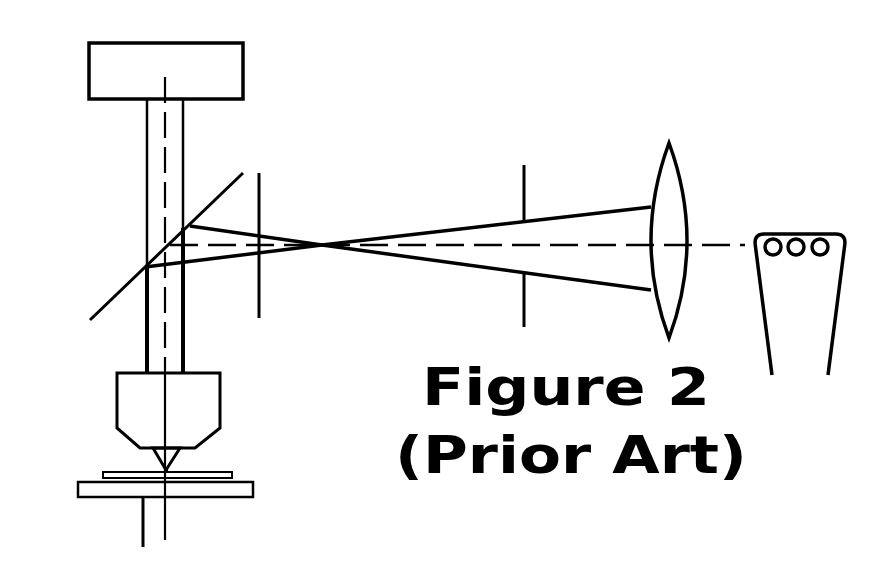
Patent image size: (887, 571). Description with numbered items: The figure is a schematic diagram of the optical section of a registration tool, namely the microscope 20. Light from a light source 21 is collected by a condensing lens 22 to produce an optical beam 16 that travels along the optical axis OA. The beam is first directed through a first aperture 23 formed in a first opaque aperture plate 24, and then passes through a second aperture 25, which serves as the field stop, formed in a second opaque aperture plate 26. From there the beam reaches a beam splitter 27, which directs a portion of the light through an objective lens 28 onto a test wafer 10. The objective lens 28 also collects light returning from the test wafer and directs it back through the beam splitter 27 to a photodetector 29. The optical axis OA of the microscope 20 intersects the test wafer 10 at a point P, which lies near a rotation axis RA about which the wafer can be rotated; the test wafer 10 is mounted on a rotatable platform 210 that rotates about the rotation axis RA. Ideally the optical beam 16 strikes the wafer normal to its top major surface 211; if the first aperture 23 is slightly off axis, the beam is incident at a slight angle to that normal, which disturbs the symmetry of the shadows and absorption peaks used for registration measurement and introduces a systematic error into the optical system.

The photodetector 29 is at (221, 70).
The beam splitter 27 is at (222, 191).
The second opaque aperture plate 26 is at (262, 213).
The second aperture 25 is at (267, 235).
The optical beam 16 is at (500, 232).
The microscope 20 is at (408, 160).
The first opaque aperture plate 24 is at (526, 187).
The condensing lens 22 is at (683, 178).
The light source 21 is at (792, 232).
The first aperture 23 is at (525, 252).
The optical axis OA is at (602, 248).
The objective lens 28 is at (197, 413).
The test wafer 10 is at (225, 475).
The rotatable platform 210 is at (247, 487).
The top major surface 211 is at (105, 472).
The point P is at (172, 470).
The rotation axis RA is at (142, 513).